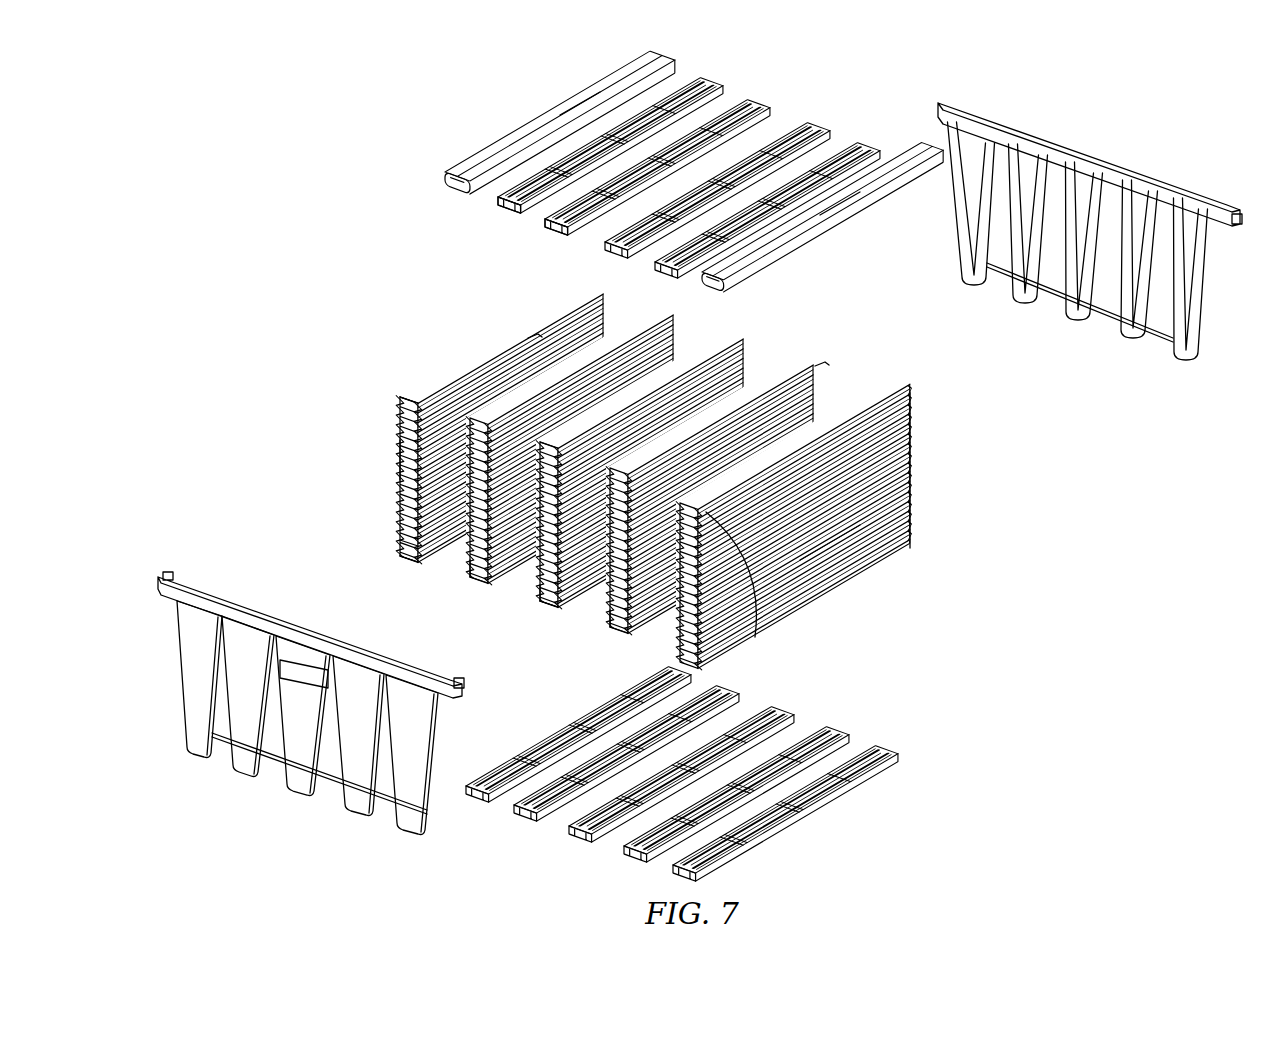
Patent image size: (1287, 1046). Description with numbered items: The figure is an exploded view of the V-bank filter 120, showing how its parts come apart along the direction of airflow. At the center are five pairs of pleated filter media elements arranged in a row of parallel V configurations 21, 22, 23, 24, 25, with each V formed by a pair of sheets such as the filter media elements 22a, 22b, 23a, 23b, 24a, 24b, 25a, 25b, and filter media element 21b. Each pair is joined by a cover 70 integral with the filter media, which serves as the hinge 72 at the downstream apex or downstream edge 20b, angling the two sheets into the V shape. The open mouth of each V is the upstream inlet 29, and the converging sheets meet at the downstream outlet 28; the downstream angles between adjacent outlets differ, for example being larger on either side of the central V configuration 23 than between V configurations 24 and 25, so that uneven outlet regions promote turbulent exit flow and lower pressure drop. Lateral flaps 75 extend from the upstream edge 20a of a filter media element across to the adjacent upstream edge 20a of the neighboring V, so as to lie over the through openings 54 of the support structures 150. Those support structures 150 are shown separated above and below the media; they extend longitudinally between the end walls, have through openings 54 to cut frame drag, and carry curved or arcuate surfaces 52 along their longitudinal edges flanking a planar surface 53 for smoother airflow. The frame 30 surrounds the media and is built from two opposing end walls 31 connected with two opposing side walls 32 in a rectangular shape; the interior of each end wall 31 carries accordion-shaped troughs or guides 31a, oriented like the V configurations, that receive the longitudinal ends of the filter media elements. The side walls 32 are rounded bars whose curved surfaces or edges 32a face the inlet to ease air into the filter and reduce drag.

The V-bank filter 120 is at (670, 442).
The upstream edge 20a is at (445, 400).
The downstream edge 20b is at (400, 545).
The V configuration 21 is at (908, 386).
The filter media element 21b is at (876, 376).
The V configuration 22 is at (825, 355).
The filter media element 22a is at (662, 625).
The filter media element 22b is at (630, 612).
The V configuration 23 is at (742, 335).
The filter media element 23a is at (580, 562).
The filter media element 23b is at (542, 585).
The V configuration 24 is at (700, 318).
The filter media element 24a is at (508, 560).
The filter media element 24b is at (470, 565).
The V configuration 25 is at (612, 278).
The filter media element 25a is at (420, 572).
The filter media element 25b is at (395, 462).
The downstream outlet 28 is at (835, 540).
The upstream inlet 29 is at (740, 603).
The frame 30 is at (1100, 98).
The end wall 31 is at (670, 472).
The trough or guide 31a is at (432, 718).
The side wall 32 is at (668, 45).
The curved surface or edge 32a is at (672, 98).
The curved or arcuate surface 52 is at (490, 204).
The planar surface 53 is at (502, 214).
The through opening 54 is at (705, 200).
The cover 70 is at (856, 356).
The hinge 72 is at (405, 560).
The lateral flap 75 is at (535, 345).
The support structure 150 is at (672, 445).